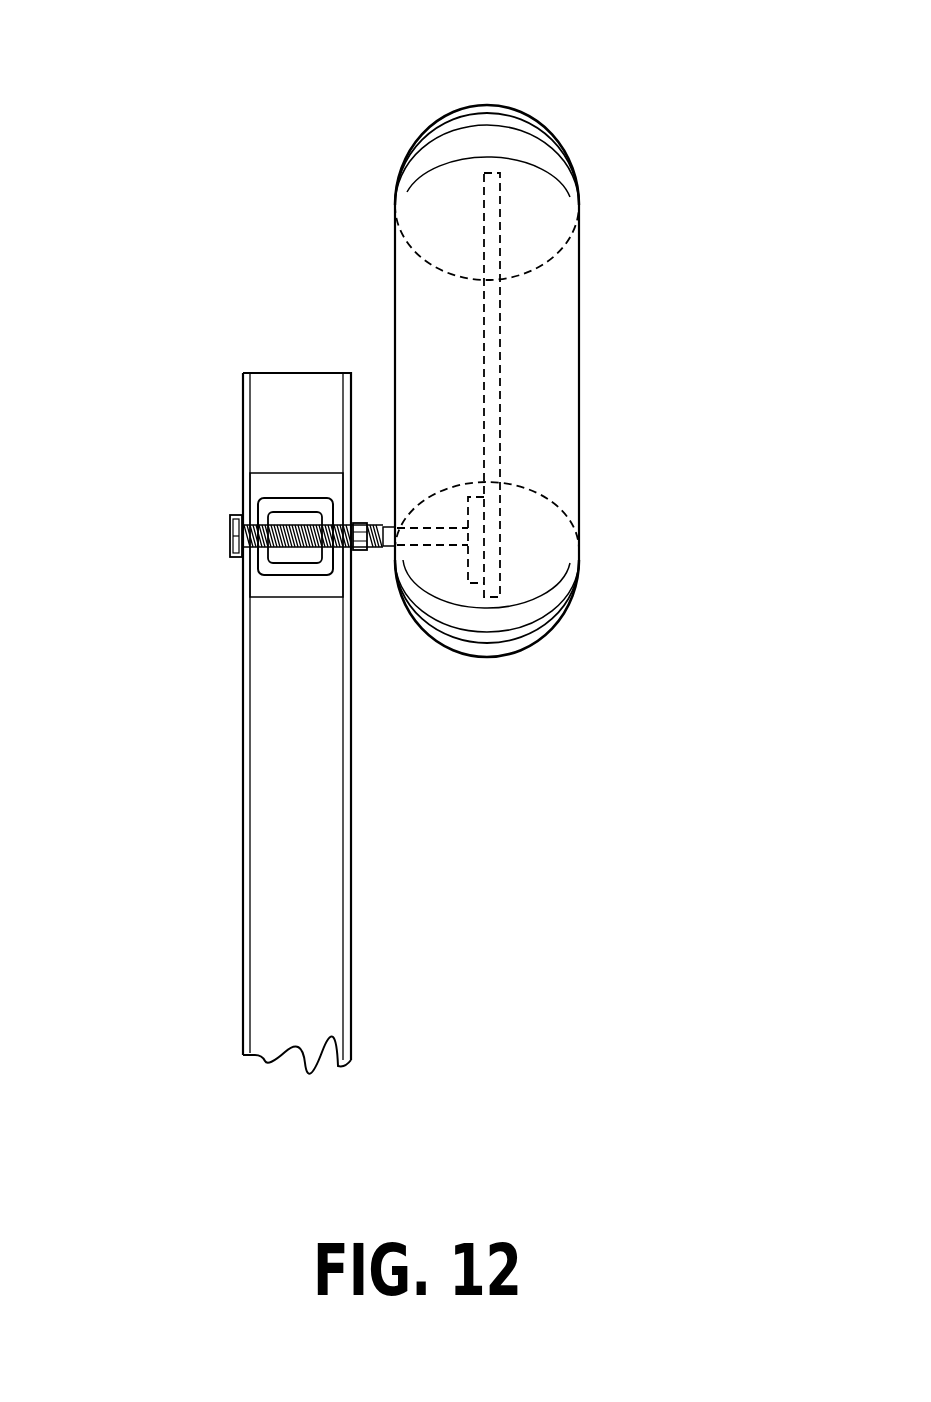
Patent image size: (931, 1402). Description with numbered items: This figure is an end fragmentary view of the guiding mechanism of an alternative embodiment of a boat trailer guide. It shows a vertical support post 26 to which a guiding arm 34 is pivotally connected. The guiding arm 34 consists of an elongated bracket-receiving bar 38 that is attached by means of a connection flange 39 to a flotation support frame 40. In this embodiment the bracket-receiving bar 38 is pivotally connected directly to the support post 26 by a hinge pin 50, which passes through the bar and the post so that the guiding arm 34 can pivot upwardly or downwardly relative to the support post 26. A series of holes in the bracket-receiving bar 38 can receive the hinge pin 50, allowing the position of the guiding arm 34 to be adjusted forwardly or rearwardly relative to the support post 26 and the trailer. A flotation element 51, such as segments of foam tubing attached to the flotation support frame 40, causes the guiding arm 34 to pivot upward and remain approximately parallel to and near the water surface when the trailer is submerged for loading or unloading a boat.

The guiding arm 34 is at (594, 375).
The flotation element 51 is at (579, 250).
The flotation support frame 40 is at (505, 404).
The connection flange 39 is at (385, 547).
The support post 26 is at (310, 912).
The bracket-receiving bar 38 is at (263, 508).
The hinge pin 50 is at (227, 533).